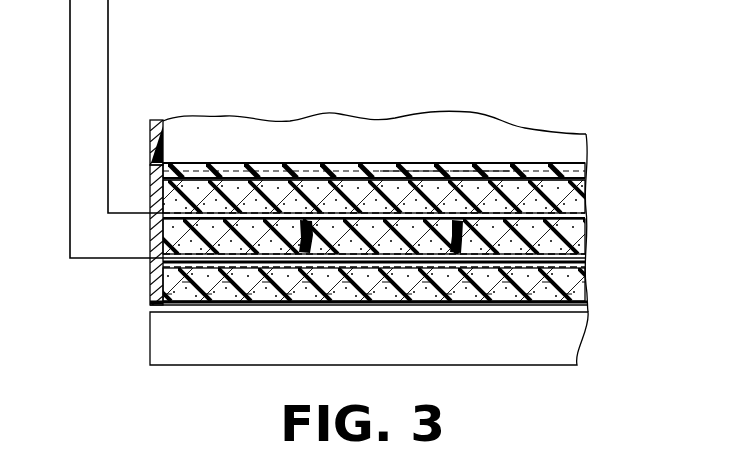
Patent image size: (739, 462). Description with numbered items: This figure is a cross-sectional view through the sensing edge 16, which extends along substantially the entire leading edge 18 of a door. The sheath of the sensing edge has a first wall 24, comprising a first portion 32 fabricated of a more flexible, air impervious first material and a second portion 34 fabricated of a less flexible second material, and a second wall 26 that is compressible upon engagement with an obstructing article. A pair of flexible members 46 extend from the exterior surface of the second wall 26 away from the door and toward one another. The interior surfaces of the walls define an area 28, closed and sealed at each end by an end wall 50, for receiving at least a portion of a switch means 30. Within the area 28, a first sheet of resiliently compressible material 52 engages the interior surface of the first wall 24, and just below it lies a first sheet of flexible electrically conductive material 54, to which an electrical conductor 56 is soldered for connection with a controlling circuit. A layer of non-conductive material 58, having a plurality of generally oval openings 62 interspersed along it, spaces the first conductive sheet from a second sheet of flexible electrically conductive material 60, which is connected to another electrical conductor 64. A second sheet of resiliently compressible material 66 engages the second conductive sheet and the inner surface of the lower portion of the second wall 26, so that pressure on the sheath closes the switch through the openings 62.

The sensing edge 16 is at (537, 167).
The leading edge 18 is at (588, 148).
The first wall 24 is at (215, 164).
The second wall 26 is at (585, 292).
The area 28 is at (585, 236).
The switch means 30 is at (585, 211).
The first portion 32 is at (471, 172).
The second portion 34 is at (404, 168).
The flexible members 46 is at (182, 343).
The end wall 50 is at (152, 237).
The first sheet of resiliently compressible material 52 is at (585, 190).
The first sheet of flexible electrically conductive material 54 is at (163, 200).
The electrical conductor 56 is at (108, 18).
The layer of non-conductive material 58 is at (584, 243).
The second sheet of flexible electrically conductive material 60 is at (584, 266).
The openings 62 is at (301, 232).
The electrical conductor 64 is at (70, 75).
The second sheet of resiliently compressible material 66 is at (165, 283).